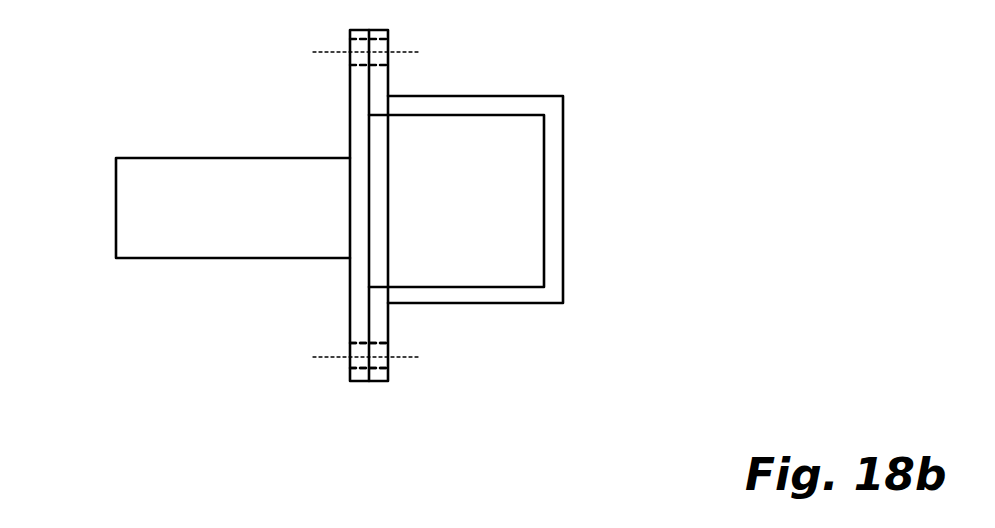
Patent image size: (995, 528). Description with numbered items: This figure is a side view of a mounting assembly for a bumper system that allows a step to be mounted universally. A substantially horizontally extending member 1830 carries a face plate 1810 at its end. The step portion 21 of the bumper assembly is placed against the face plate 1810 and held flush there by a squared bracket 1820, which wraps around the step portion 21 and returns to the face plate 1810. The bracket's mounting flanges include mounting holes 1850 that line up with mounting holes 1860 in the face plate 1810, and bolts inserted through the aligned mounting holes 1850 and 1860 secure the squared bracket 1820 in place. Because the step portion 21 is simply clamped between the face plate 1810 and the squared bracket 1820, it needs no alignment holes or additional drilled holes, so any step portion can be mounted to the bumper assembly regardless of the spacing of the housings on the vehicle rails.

The face plate 1810 is at (333, 205).
The squared bracket 1820 is at (516, 199).
The horizontally extending member 1830 is at (196, 200).
The mounting holes 1850 is at (405, 224).
The mounting holes 1860 is at (327, 380).
The step portion 21 is at (510, 201).